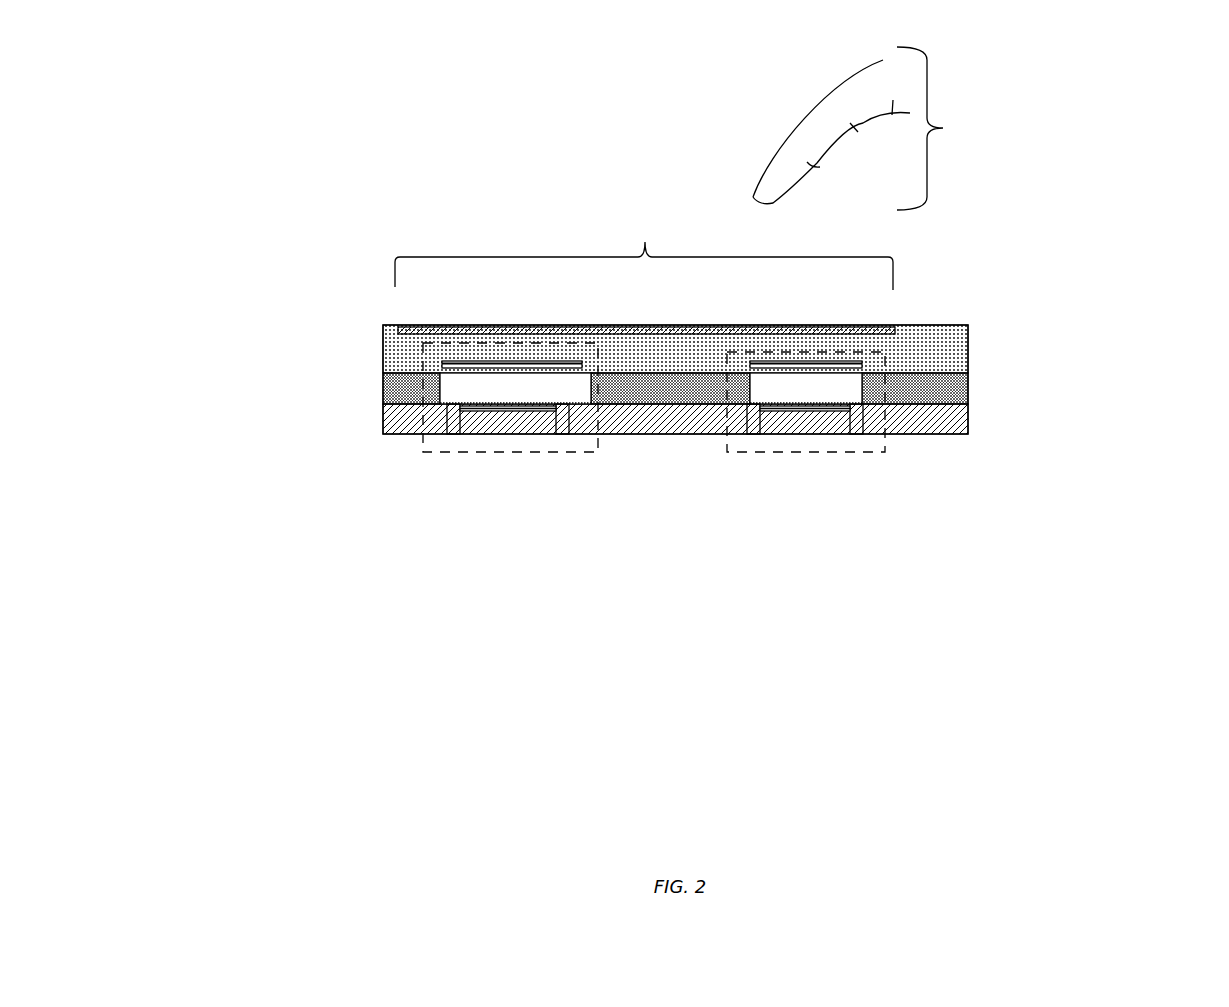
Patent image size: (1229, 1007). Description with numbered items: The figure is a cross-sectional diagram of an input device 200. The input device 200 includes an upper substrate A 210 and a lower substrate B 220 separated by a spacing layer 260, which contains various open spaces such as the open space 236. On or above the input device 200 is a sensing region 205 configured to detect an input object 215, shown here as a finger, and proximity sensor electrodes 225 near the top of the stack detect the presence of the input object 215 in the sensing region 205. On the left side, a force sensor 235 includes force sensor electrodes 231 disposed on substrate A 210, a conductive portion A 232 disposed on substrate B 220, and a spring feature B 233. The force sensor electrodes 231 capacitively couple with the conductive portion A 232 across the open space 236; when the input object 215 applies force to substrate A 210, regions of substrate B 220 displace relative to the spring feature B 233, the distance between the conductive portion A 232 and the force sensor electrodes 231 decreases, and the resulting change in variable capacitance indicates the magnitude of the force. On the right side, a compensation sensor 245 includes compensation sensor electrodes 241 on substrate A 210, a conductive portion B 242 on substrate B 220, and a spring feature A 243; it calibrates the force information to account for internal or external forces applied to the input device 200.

The input device 200 is at (278, 135).
The sensing region 205 is at (644, 239).
The substrate A 210 is at (383, 347).
The input object 215 is at (908, 128).
The substrate B 220 is at (968, 413).
The proximity sensor electrodes 225 is at (812, 318).
The force sensor electrodes 231 is at (485, 358).
The conductive portion A 232 is at (550, 411).
The spring feature B 233 is at (570, 437).
The force sensor 235 is at (413, 382).
The open space 236 is at (450, 389).
The compensation sensor electrodes 241 is at (868, 360).
The conductive portion B 242 is at (789, 412).
The spring feature A 243 is at (853, 437).
The compensation sensor 245 is at (870, 460).
The spacing layer 260 is at (968, 380).